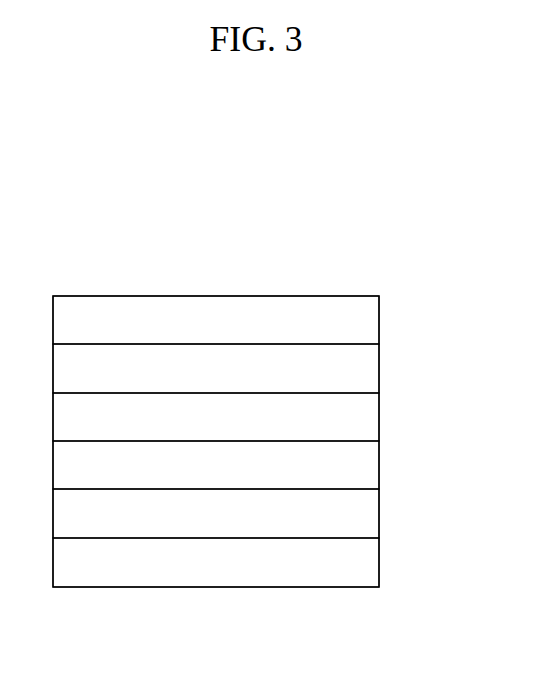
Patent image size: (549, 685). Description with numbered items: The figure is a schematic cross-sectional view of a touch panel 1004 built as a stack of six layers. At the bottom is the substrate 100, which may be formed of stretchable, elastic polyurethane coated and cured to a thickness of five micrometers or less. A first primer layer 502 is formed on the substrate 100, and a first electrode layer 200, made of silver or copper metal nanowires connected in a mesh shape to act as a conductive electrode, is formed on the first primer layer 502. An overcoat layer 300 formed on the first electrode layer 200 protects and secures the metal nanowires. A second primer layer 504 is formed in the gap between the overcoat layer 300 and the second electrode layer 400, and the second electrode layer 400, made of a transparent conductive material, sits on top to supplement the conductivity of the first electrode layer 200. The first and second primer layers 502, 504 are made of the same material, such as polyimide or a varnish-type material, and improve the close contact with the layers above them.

The touch panel 1004 is at (282, 233).
The second electrode layer 400 is at (379, 320).
The second primer layer 504 is at (379, 367).
The overcoat layer 300 is at (379, 415).
The first electrode layer 200 is at (379, 463).
The first primer layer 502 is at (379, 512).
The substrate 100 is at (379, 560).